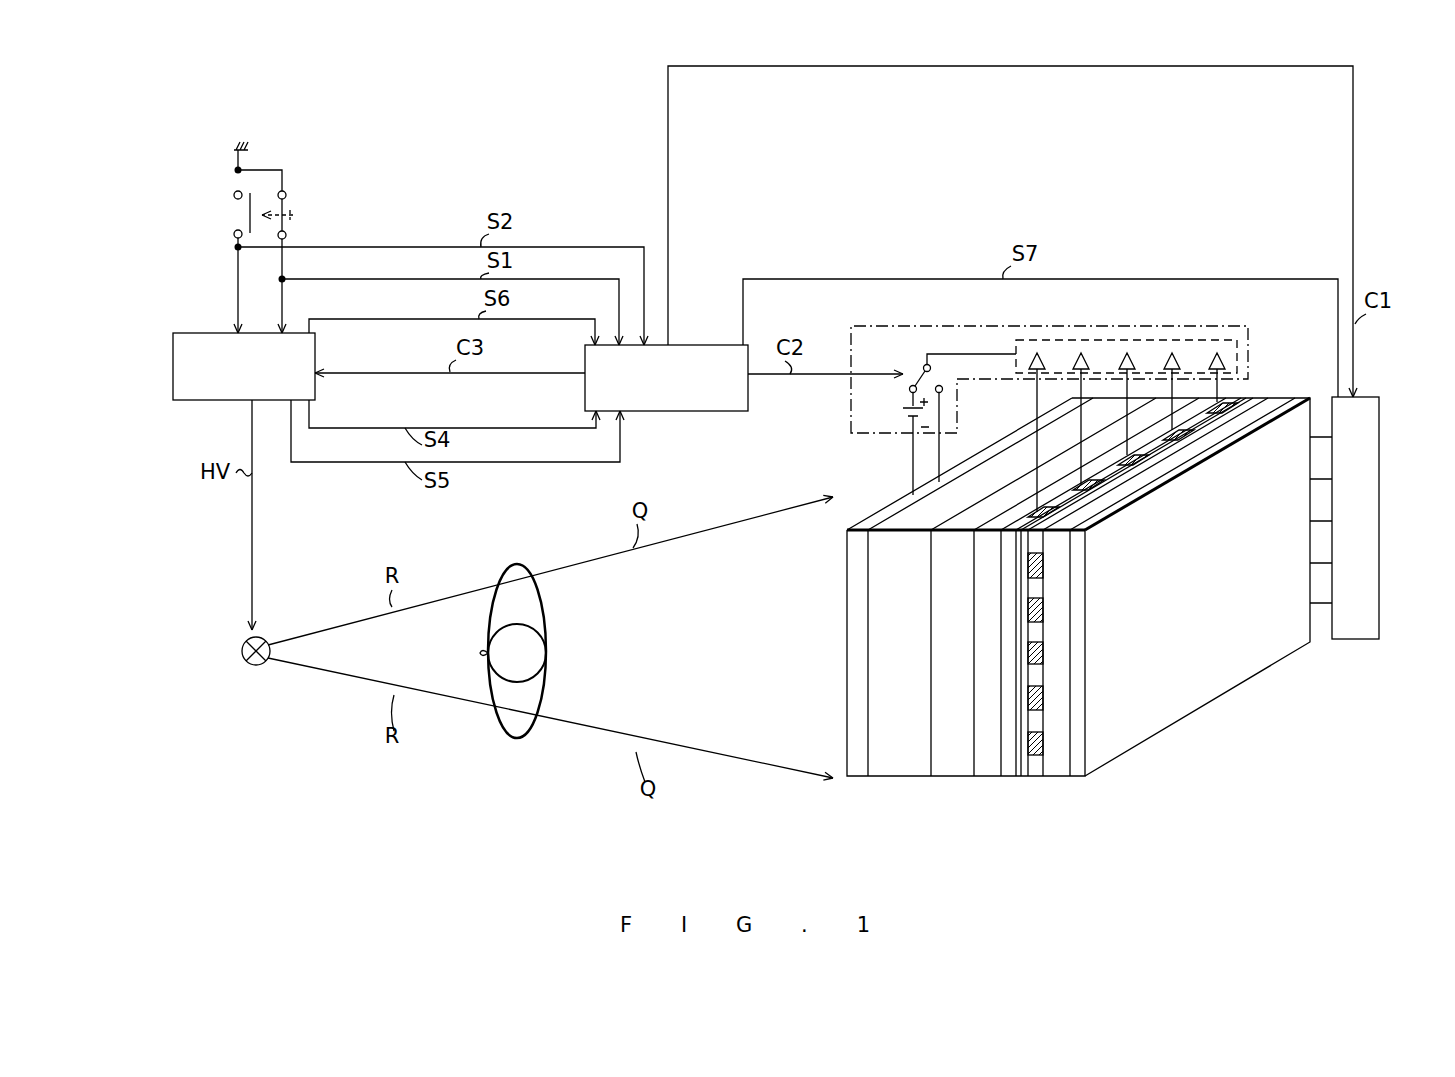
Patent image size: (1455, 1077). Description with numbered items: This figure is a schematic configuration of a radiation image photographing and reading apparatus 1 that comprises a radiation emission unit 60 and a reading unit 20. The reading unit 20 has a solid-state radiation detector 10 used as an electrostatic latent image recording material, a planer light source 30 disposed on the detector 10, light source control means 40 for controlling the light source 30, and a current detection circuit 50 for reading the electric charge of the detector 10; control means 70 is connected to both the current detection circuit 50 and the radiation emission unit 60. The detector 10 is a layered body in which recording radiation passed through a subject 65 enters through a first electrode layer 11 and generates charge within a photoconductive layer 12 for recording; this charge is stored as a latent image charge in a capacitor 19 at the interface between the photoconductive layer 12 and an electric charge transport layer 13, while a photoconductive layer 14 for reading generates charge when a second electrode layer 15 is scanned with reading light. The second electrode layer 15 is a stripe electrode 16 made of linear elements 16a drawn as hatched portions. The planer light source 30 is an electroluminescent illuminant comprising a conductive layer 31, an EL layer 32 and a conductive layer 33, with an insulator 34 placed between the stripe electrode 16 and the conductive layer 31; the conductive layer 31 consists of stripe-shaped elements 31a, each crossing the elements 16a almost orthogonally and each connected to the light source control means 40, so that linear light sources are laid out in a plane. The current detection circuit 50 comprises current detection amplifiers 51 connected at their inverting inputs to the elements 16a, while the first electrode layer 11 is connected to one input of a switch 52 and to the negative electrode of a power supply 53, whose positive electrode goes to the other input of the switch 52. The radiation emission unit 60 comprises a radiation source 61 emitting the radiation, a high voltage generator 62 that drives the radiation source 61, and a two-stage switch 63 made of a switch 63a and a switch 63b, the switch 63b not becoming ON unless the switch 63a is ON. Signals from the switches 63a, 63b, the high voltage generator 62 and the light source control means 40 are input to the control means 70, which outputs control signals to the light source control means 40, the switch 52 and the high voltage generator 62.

The radiation image photographing and reading apparatus 1 is at (1373, 148).
The solid-state radiation detector 10 is at (1076, 643).
The first electrode layer 11 is at (857, 778).
The photoconductive layer for recording 12 is at (885, 778).
The electric charge transport layer 13 is at (945, 778).
The photoconductive layer for reading 14 is at (987, 778).
The second electrode layer 15 is at (1106, 622).
The stripe electrode 16 is at (1176, 442).
The element 16a is at (1228, 403).
The capacitor 19 is at (929, 745).
The reading unit 20 is at (1386, 345).
The planer light source 30 is at (1151, 643).
The conductive layer 31 is at (1140, 622).
The element 31a is at (1038, 778).
The EL layer 32 is at (1057, 778).
The conductive layer 33 is at (1091, 812).
The insulator 34 is at (1020, 778).
The light source control means 40 is at (1380, 398).
The current detection circuit 50 is at (1078, 403).
The current detection amplifier 51 is at (1238, 360).
The switch 52 is at (923, 365).
The power supply 53 is at (903, 416).
The radiation emission unit 60 is at (244, 330).
The radiation source 61 is at (255, 668).
The high voltage generator 62 is at (216, 333).
The switch 63 is at (307, 161).
The switch 63a is at (286, 192).
The switch 63b is at (242, 191).
The subject 65 is at (505, 738).
The control means 70 is at (692, 345).